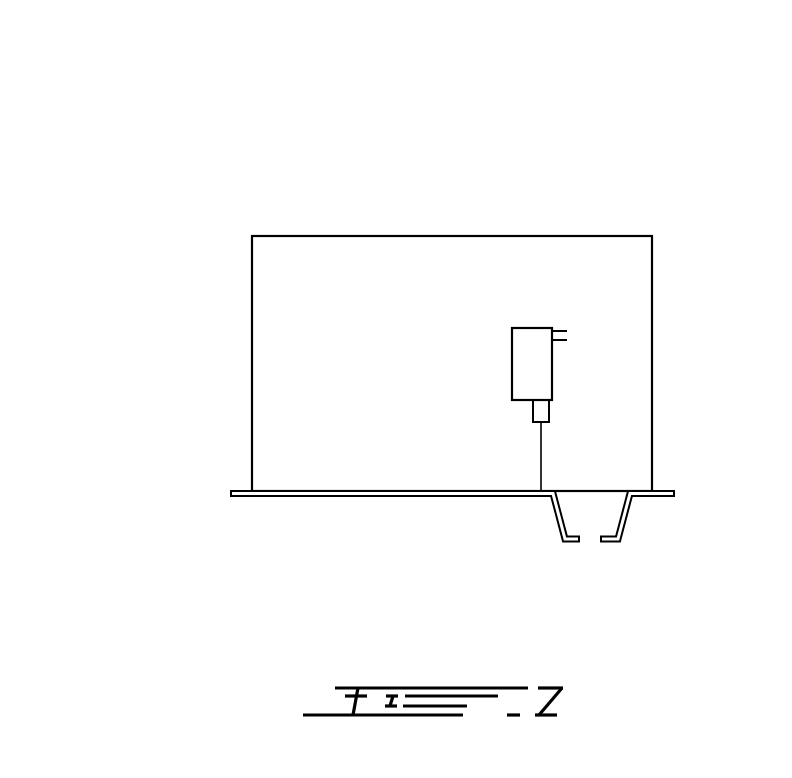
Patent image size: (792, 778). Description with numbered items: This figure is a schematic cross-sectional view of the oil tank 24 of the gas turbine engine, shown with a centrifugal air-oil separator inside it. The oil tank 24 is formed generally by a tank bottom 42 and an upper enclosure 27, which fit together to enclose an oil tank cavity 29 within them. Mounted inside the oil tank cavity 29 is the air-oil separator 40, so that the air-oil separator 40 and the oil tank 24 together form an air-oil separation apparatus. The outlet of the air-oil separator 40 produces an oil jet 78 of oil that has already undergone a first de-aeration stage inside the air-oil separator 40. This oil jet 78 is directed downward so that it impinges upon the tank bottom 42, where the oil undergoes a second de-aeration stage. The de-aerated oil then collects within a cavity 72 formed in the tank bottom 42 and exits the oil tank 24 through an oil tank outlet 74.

The oil tank 24 is at (624, 192).
The upper enclosure 27 is at (252, 331).
The oil tank cavity 29 is at (360, 380).
The air-oil separator 40 is at (522, 305).
The tank bottom 42 is at (210, 490).
The cavity 72 is at (608, 505).
The oil tank outlet 74 is at (588, 543).
The oil jet 78 is at (542, 447).